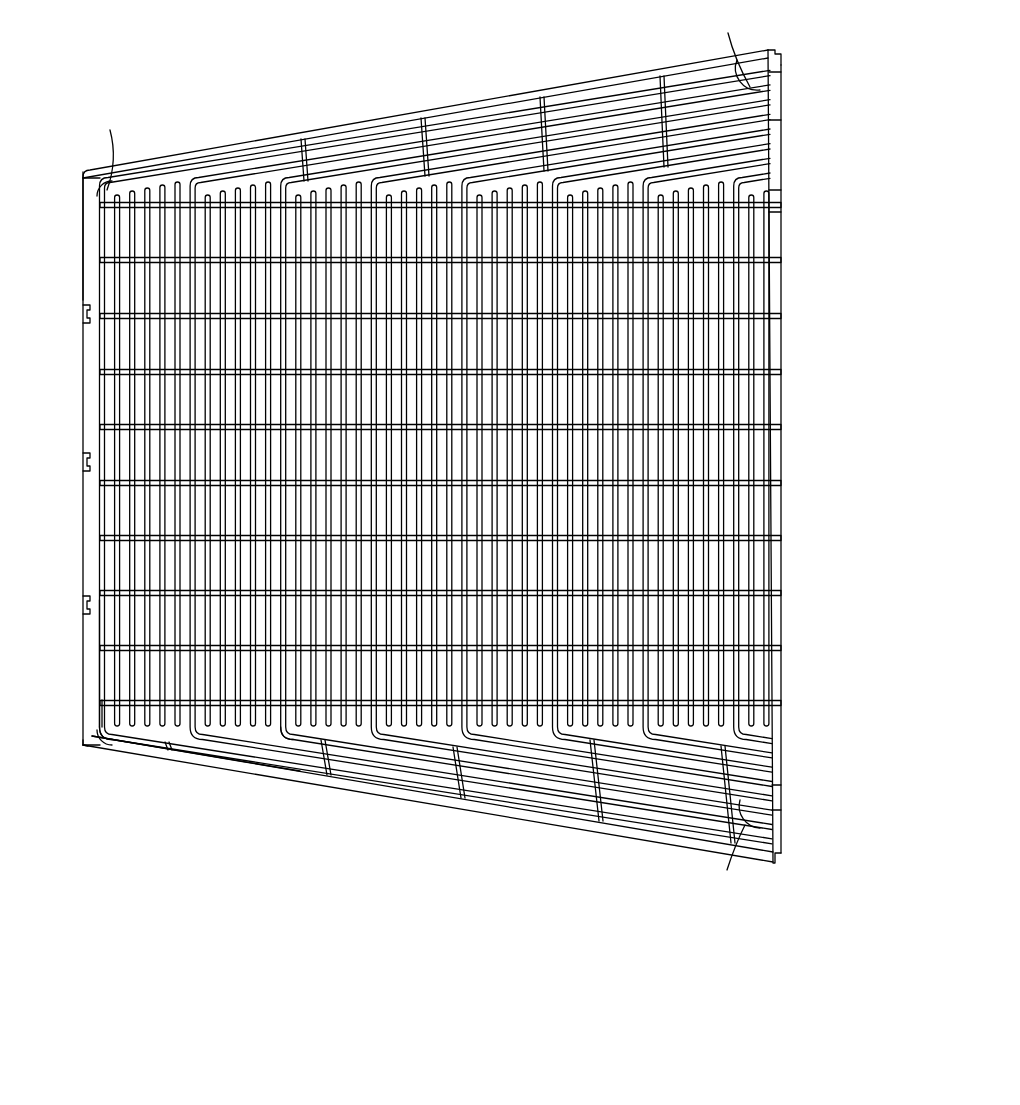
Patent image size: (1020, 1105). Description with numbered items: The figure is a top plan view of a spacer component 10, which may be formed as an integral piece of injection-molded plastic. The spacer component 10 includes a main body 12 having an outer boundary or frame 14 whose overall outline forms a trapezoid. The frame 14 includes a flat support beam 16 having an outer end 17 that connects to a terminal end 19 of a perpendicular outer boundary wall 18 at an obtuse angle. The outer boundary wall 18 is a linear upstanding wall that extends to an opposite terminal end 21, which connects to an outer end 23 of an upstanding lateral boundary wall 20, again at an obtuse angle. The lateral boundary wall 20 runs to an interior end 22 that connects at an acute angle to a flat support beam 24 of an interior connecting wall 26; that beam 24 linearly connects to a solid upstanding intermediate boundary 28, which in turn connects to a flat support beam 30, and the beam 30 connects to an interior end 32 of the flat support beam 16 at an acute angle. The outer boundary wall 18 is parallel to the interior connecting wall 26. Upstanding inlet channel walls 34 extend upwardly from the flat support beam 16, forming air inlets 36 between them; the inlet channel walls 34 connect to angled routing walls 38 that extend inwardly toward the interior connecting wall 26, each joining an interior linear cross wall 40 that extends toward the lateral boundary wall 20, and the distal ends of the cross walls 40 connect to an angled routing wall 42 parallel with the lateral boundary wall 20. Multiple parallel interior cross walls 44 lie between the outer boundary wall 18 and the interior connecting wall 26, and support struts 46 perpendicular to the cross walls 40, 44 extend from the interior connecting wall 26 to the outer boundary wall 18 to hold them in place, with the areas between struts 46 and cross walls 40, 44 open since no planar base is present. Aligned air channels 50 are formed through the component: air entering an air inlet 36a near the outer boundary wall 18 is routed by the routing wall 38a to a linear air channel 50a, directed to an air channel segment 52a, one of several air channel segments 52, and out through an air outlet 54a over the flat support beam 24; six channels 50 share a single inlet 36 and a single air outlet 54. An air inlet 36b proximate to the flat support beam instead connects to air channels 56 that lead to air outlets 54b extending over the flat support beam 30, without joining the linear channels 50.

The spacer component 10 is at (181, 66).
The main body 12 is at (357, 120).
The outer boundary or frame 14 is at (197, 767).
The flat support beam 16 is at (337, 790).
The outer end 17 is at (95, 748).
The perpendicular outer boundary wall 18 is at (85, 688).
The terminal end 19 is at (85, 745).
The upstanding lateral boundary wall 20 is at (197, 150).
The opposite terminal end 21 is at (83, 180).
The interior end 22 is at (777, 53).
The outer end 23 is at (93, 170).
The flat support beam 24 is at (782, 85).
The interior connecting wall 26 is at (784, 418).
The upstanding intermediate boundary 28 is at (785, 318).
The flat support beam 30 is at (783, 768).
The interior end 32 is at (770, 867).
The upstanding inlet channel vanes or walls 34 is at (137, 753).
The air inlets 36 is at (240, 768).
The air inlet 36a is at (122, 755).
The air inlet 36b is at (607, 832).
The angled routing walls 38 is at (482, 798).
The routing wall 38a is at (167, 750).
The interior linear cross walls 40 is at (285, 668).
The angled routing wall 42 is at (243, 170).
The interior cross walls 44 is at (133, 392).
The support struts 46 is at (732, 530).
The aligned air channels 50 is at (623, 337).
The aligned linear air channel 50a is at (105, 680).
The air channel segments 52 is at (365, 140).
The air channel segment 52a is at (168, 190).
The air outlet 54 is at (782, 120).
The air outlet 54a is at (783, 72).
The air outlets 54b is at (778, 810).
The air channels 56 is at (750, 785).